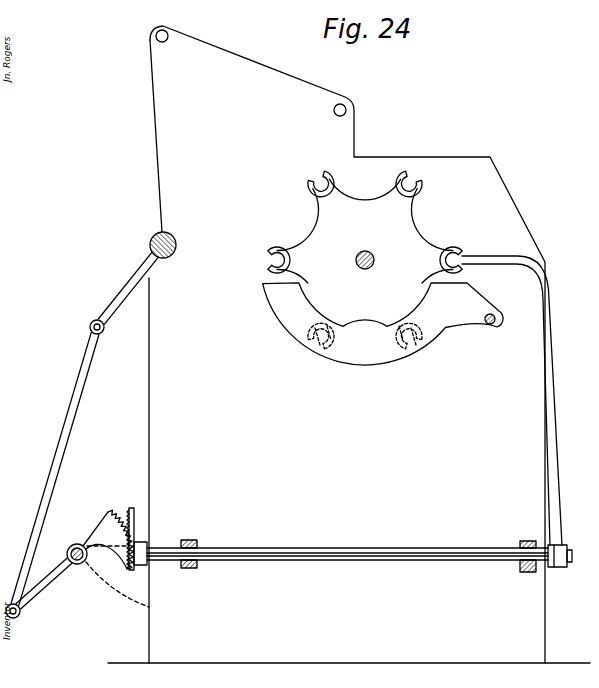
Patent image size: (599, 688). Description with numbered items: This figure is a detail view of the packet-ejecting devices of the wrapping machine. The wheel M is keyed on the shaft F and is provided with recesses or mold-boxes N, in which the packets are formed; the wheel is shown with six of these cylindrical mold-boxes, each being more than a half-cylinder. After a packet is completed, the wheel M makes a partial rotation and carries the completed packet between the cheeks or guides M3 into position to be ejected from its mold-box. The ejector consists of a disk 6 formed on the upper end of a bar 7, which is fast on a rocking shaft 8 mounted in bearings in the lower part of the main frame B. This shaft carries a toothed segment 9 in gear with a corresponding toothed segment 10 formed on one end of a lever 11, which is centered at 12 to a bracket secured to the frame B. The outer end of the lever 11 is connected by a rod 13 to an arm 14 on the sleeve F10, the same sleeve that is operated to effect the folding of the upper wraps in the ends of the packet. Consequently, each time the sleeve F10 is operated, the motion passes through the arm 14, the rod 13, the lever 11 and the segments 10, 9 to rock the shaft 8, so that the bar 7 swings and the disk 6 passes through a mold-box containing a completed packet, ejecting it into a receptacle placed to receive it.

The sleeve F10 is at (182, 247).
The arm 14 is at (128, 289).
The rod 13 is at (72, 423).
The center of lever 12 is at (74, 545).
The lever 11 is at (50, 587).
The toothed segment 10 is at (116, 558).
The toothed segment 9 is at (137, 538).
The framing B is at (185, 509).
The rocking shaft 8 is at (391, 548).
The bar 7 is at (552, 386).
The disk 6 is at (457, 258).
The shaft F is at (375, 261).
The wheel M is at (360, 239).
The cheeks or guides M3 is at (383, 324).
The mold-boxes N is at (365, 260).